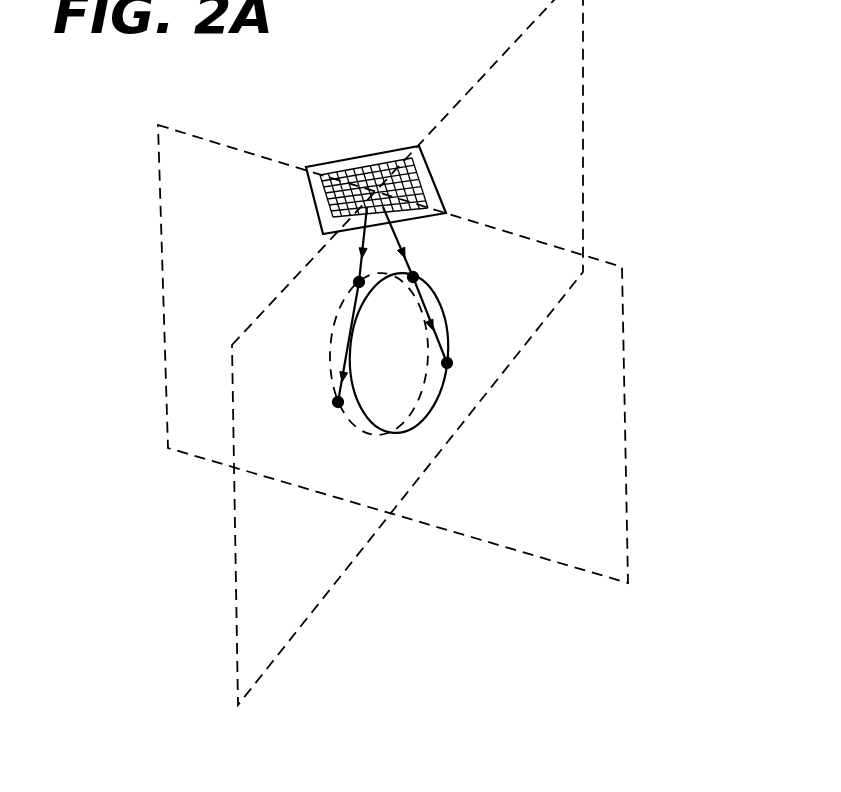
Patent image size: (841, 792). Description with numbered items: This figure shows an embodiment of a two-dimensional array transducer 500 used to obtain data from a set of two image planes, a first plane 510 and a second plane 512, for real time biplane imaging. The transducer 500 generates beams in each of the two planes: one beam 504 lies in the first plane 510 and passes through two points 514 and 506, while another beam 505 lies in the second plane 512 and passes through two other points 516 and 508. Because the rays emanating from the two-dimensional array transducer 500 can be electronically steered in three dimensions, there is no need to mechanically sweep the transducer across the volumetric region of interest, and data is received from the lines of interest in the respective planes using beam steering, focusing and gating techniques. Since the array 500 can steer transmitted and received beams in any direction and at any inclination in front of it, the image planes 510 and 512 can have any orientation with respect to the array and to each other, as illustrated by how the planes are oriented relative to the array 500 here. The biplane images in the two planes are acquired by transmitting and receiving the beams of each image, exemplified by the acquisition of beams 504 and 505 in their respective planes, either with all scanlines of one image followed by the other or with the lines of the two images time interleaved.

The two-dimensional array transducer 500 is at (343, 163).
The beam 504 is at (393, 240).
The beam 505 is at (363, 228).
The point 506 is at (447, 363).
The point 508 is at (338, 402).
The plane 510 is at (583, 92).
The plane 512 is at (627, 493).
The point 514 is at (413, 277).
The point 516 is at (359, 282).